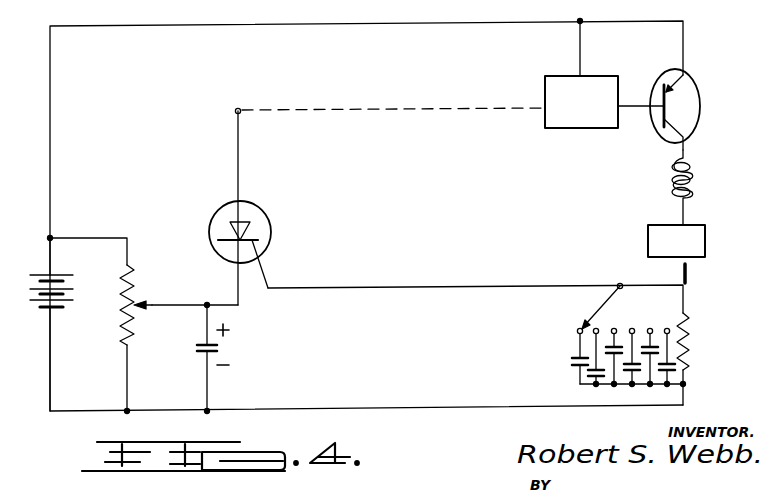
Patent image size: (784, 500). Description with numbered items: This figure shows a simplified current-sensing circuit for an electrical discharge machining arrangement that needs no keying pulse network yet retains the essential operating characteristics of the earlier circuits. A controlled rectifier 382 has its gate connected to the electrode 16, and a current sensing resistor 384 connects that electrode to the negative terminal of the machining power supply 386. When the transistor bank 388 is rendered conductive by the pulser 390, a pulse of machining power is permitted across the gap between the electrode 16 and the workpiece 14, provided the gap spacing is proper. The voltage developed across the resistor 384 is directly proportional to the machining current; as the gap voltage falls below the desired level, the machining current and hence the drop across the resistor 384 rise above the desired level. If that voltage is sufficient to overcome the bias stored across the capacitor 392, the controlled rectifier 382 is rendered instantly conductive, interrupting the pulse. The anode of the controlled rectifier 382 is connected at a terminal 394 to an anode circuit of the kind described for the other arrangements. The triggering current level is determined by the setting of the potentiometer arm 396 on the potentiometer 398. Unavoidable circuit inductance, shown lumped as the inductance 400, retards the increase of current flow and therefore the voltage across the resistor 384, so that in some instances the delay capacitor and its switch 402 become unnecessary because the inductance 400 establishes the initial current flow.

The workpiece 14 is at (695, 237).
The electrode 16 is at (689, 276).
The controlled rectifier 382 is at (262, 227).
The current sensing resistor 384 is at (690, 340).
The machining power supply 386 is at (97, 268).
The transistor bank 388 is at (700, 101).
The control circuit 390 is at (598, 113).
The capacitor 392 is at (217, 348).
The terminal 394 is at (238, 109).
The potentiometer arm 396 is at (156, 304).
The potentiometer 398 is at (118, 323).
The inductance 400 is at (672, 185).
The switch 402 is at (602, 305).